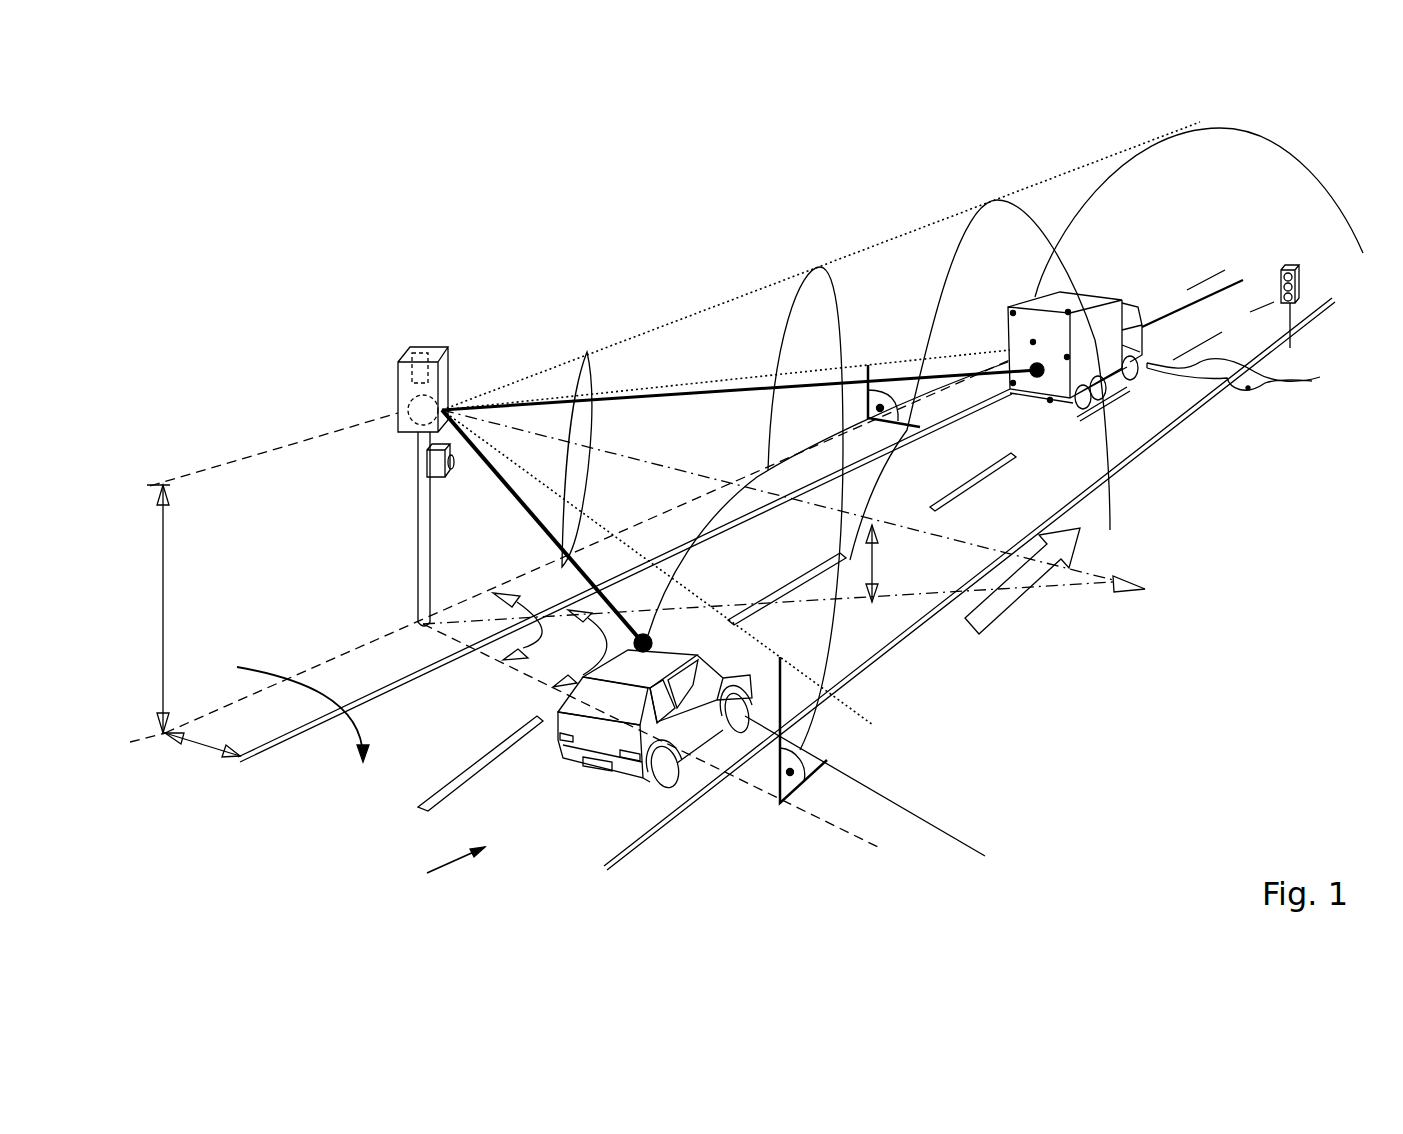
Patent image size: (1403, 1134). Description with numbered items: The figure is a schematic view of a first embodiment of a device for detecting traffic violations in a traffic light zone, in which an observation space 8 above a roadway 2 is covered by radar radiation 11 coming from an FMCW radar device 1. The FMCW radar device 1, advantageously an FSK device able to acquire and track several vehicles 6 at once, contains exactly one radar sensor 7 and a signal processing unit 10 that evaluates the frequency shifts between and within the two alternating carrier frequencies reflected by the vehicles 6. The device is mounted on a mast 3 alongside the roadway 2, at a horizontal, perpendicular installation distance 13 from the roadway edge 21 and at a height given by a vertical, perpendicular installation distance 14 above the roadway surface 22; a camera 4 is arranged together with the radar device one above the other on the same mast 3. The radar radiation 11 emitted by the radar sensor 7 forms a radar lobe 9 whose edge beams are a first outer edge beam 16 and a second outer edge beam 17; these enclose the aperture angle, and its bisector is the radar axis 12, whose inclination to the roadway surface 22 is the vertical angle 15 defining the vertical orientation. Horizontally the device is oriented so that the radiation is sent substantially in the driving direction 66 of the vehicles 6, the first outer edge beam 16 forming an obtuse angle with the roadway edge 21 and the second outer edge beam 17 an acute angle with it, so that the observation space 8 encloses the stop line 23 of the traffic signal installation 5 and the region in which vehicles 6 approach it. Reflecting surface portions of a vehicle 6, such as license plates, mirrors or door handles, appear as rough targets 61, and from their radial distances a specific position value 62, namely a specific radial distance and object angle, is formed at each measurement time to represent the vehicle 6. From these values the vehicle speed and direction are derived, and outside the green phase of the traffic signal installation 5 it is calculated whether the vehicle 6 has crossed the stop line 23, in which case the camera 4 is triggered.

The FMCW radar device 1 is at (452, 360).
The roadway 2 is at (445, 868).
The mast 3 is at (417, 503).
The camera 4 is at (427, 465).
The traffic signal installation 5 is at (1290, 265).
The vehicle 6 is at (600, 737).
The radar sensor 7 is at (410, 402).
The observation space 8 is at (1045, 207).
The radar lobe 9 is at (745, 293).
The signal processing unit 10 is at (420, 347).
The radar radiation 11 is at (590, 372).
The radar axis 12 is at (647, 637).
The horizontal, perpendicular installation distance 13 is at (202, 756).
The vertical, perpendicular installation distance 14 is at (149, 609).
The vertical angle 15 is at (888, 563).
The first outer edge beam 16 is at (858, 718).
The second outer edge beam 17 is at (893, 360).
The roadway edge 21 is at (284, 746).
The roadway surface 22 is at (284, 706).
The stop line 23 is at (1250, 367).
The rough target 61 is at (1068, 357).
The specific position value 62 is at (1039, 377).
The driving direction 66 is at (993, 603).